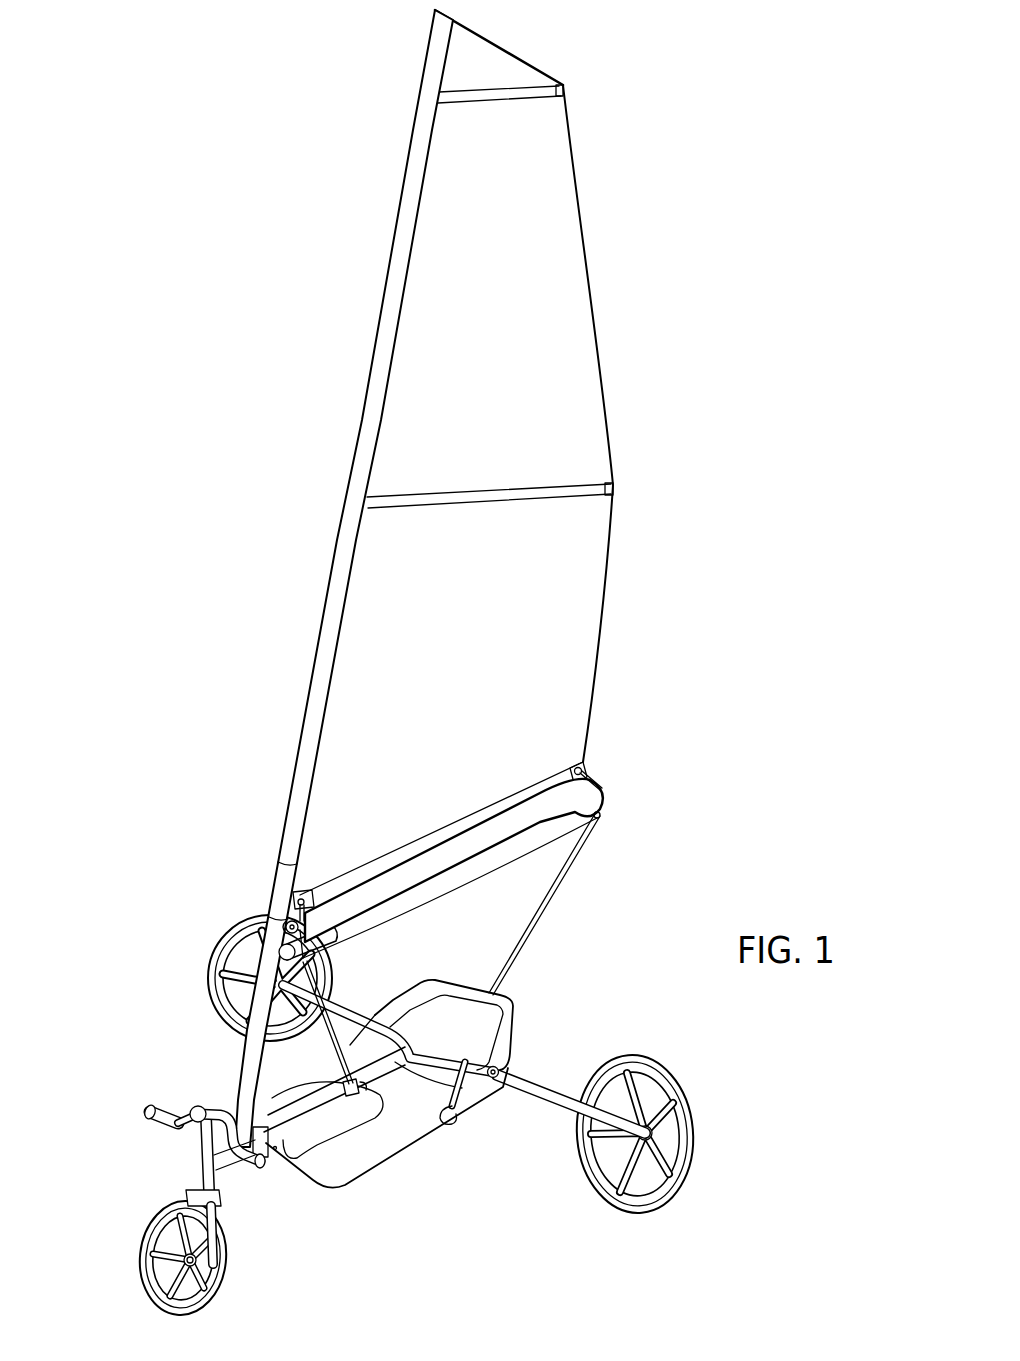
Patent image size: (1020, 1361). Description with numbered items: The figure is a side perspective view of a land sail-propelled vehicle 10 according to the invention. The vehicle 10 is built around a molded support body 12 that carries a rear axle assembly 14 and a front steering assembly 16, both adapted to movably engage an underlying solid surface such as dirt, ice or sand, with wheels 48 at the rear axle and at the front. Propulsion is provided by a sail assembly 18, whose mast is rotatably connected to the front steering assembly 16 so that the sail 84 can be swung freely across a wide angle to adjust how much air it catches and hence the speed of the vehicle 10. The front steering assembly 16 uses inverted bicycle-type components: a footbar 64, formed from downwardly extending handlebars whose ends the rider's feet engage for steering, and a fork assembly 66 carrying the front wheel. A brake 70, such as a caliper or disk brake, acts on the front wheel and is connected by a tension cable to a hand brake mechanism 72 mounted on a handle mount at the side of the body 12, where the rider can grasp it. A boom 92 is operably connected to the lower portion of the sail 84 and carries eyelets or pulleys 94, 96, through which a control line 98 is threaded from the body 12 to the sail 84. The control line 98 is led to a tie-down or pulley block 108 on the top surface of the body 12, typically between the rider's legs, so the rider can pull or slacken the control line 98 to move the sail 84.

The vehicle 10 is at (408, 664).
The support body 12 is at (415, 1163).
The rear axle assembly 14 is at (539, 1066).
The front steering assembly 16 is at (174, 1186).
The sail assembly 18 is at (443, 578).
The wheel 48 is at (232, 938).
The footbar 64 is at (196, 1106).
The fork assembly 66 is at (207, 1261).
The brake 70 is at (215, 1212).
The hand brake mechanism 72 is at (457, 1103).
The sail 84 is at (583, 313).
The boom 92 is at (513, 845).
The eyelet or pulley 94 is at (602, 812).
The eyelet or pulley 96 is at (305, 958).
The control line 98 is at (541, 921).
The tie-down or pulley block 108 is at (352, 1093).